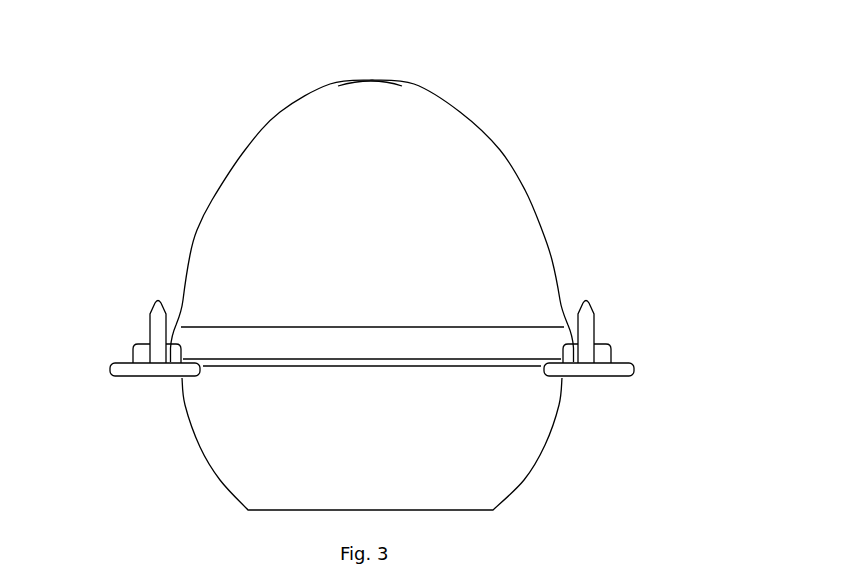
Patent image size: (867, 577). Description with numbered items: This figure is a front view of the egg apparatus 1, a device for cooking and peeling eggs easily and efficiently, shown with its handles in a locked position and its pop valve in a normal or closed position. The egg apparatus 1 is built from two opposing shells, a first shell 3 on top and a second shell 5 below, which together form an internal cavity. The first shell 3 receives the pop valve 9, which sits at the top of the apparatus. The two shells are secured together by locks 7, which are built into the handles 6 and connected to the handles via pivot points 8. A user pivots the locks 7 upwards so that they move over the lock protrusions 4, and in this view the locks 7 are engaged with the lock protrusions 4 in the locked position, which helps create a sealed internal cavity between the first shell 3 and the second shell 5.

The egg apparatus 1 is at (170, 142).
The first shell 3 is at (525, 193).
The lock protrusions 4 is at (596, 340).
The second shell 5 is at (524, 459).
The handles 6 is at (624, 370).
The locks 7 is at (584, 325).
The pivot points 8 is at (157, 355).
The pop valve 9 is at (373, 82).